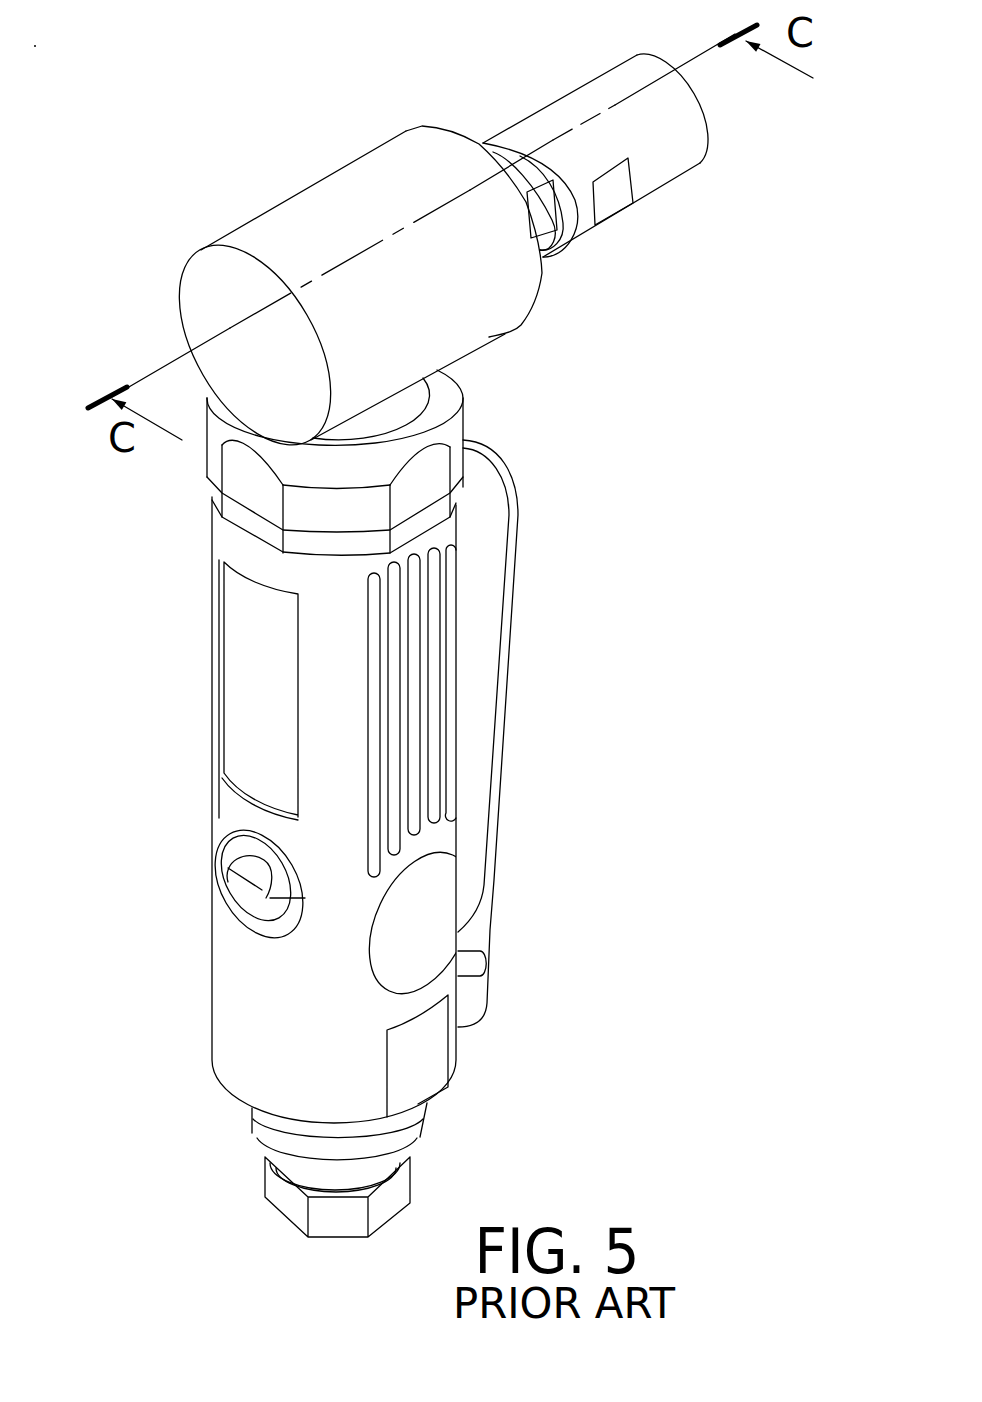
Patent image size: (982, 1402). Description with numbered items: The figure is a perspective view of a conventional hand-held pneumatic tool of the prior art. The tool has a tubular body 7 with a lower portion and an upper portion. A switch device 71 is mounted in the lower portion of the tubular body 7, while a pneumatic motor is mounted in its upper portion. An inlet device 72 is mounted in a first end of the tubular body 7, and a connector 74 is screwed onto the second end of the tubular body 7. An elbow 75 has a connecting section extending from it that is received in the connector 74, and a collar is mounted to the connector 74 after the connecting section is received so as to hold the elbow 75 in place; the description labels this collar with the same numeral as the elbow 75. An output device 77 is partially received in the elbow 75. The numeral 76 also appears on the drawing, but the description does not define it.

The tubular body 7 is at (247, 548).
The switch device 71 is at (232, 907).
The inlet device 72 is at (400, 1135).
The connector 74 is at (430, 517).
The elbow 75 is at (317, 197).
The head 76 is at (446, 409).
The output device 77 is at (547, 113).